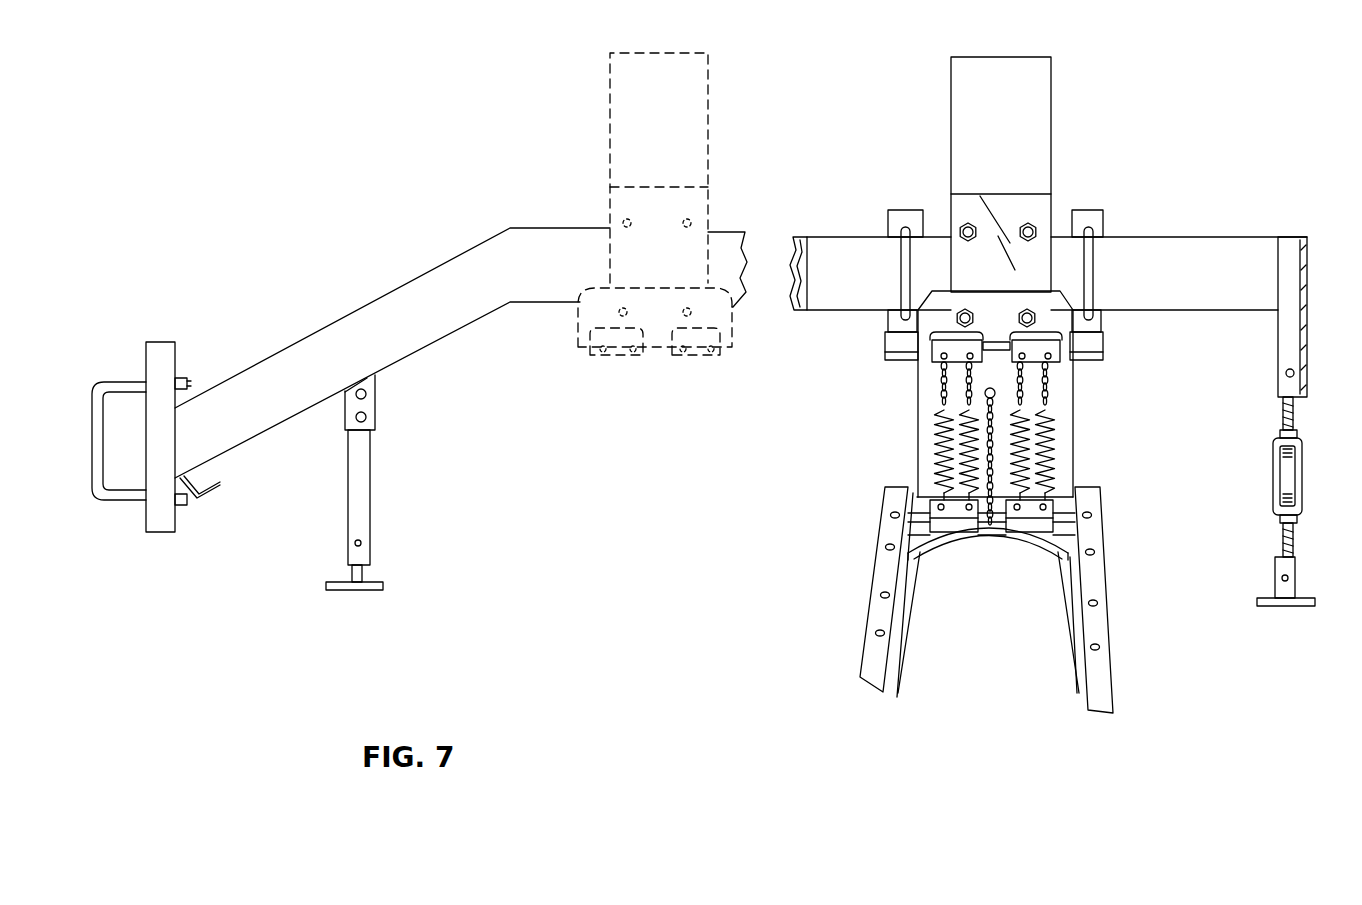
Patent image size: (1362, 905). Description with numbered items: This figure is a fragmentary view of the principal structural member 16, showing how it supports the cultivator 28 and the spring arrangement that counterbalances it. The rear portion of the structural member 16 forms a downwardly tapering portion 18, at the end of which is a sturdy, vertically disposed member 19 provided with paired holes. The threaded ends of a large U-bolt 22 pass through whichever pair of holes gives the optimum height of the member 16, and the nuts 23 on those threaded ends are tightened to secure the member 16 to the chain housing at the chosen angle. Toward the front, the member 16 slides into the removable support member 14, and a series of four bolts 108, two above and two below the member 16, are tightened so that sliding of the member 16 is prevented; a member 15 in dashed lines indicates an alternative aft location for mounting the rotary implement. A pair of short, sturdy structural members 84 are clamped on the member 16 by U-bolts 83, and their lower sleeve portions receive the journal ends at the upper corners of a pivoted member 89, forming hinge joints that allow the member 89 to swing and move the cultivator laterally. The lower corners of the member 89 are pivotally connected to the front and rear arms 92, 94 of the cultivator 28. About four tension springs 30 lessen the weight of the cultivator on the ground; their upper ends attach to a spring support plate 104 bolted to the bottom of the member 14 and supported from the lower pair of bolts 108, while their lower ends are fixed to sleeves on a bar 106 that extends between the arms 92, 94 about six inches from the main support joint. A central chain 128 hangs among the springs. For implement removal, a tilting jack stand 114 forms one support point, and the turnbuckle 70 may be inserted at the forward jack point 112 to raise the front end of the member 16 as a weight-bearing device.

The removable support member 14 is at (1038, 148).
The member (aft mounting position) 15 is at (618, 125).
The principal structural member 16 is at (1196, 249).
The downwardly tapering portion 18 is at (360, 320).
The vertically disposed member 19 is at (158, 358).
The U-bolt 22 is at (97, 499).
The nuts 23 is at (181, 503).
The cultivator 28 is at (925, 610).
The tension springs 30 is at (1050, 447).
The turnbuckle 70 is at (1280, 462).
The U-bolts 83 is at (906, 278).
The short structural members 84 is at (907, 215).
The pivoted member 89 is at (920, 443).
The front arm 92 is at (1098, 597).
The rear arm 94 is at (883, 547).
The spring support plate 104 is at (933, 322).
The bar 106 is at (1063, 527).
The bolts 108 is at (964, 225).
The forward jack point 112 is at (1293, 330).
The tilting jack stand 114 is at (360, 516).
The center chain 128 is at (988, 458).